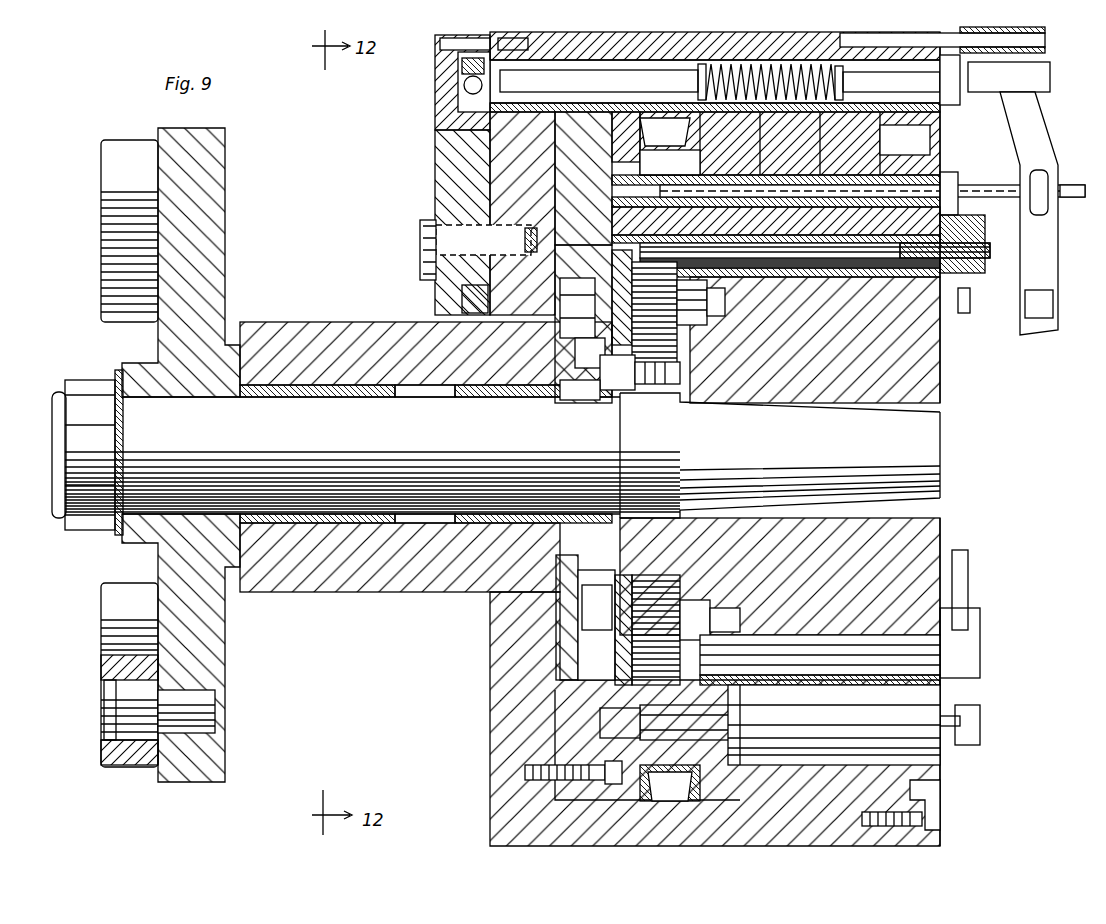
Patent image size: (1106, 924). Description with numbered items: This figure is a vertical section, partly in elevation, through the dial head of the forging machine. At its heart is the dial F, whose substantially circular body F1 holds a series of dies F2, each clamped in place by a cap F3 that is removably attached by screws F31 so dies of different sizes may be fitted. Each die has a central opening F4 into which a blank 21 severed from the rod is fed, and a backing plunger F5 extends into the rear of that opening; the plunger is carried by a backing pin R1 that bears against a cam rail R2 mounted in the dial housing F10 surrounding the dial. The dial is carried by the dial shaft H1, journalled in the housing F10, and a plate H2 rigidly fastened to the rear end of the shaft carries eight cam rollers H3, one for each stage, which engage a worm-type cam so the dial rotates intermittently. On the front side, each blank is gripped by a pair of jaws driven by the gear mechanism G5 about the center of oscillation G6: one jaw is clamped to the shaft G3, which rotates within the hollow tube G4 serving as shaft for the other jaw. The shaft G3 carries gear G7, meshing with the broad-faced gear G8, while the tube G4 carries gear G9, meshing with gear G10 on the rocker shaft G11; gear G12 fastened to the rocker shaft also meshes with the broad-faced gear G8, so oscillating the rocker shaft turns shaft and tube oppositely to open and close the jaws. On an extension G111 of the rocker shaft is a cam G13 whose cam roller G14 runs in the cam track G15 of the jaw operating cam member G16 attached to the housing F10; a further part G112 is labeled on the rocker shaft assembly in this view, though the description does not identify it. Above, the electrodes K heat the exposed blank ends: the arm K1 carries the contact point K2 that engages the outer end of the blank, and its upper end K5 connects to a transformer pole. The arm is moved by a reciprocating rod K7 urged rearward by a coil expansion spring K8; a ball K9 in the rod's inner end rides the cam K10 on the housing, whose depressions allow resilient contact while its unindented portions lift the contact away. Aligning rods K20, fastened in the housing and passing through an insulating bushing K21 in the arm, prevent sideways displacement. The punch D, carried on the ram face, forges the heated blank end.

The dial shaft H1 is at (914, 438).
The plate H2 is at (215, 258).
The cam rollers H3 is at (122, 172).
The electrical contact members or electrodes K is at (1052, 100).
The arm K1 is at (1050, 76).
The contact point K2 is at (1068, 198).
The upper end K5 is at (1046, 40).
The reciprocating rods K7 is at (462, 140).
The coil expansion springs K8 is at (900, 77).
The ball K9 is at (468, 106).
The cam K10 is at (452, 78).
The rods K20 is at (950, 100).
The insulating bushing K21 is at (1048, 52).
The blank 21 is at (968, 183).
The punch D is at (985, 280).
The dial F is at (952, 354).
The circular body F1 is at (956, 545).
The dies F2 is at (935, 705).
The caps F3 is at (920, 795).
The screws F31 is at (925, 825).
The central opening F4 is at (885, 160).
The backing plunger F5 is at (690, 132).
The dial housing F10 is at (505, 700).
The backing pin R1 is at (640, 135).
The cam rail R2 is at (605, 738).
The shaft G3 is at (865, 262).
The hollow tube G4 is at (855, 260).
The gear mechanism G5 is at (580, 232).
The center of oscillation G6 is at (475, 290).
The gear G7 is at (668, 165).
The broad-faced gear G8 is at (700, 330).
The gear G9 is at (776, 221).
The gear G10 is at (690, 300).
The rocker shaft G11 is at (575, 290).
The gear G12 is at (600, 392).
The cam G13 is at (500, 397).
The cam roller G14 is at (535, 397).
The cam track G15 is at (460, 397).
The jaw operating cam member G16 is at (568, 578).
The extension G111 is at (568, 400).
The ring G112 is at (585, 312).